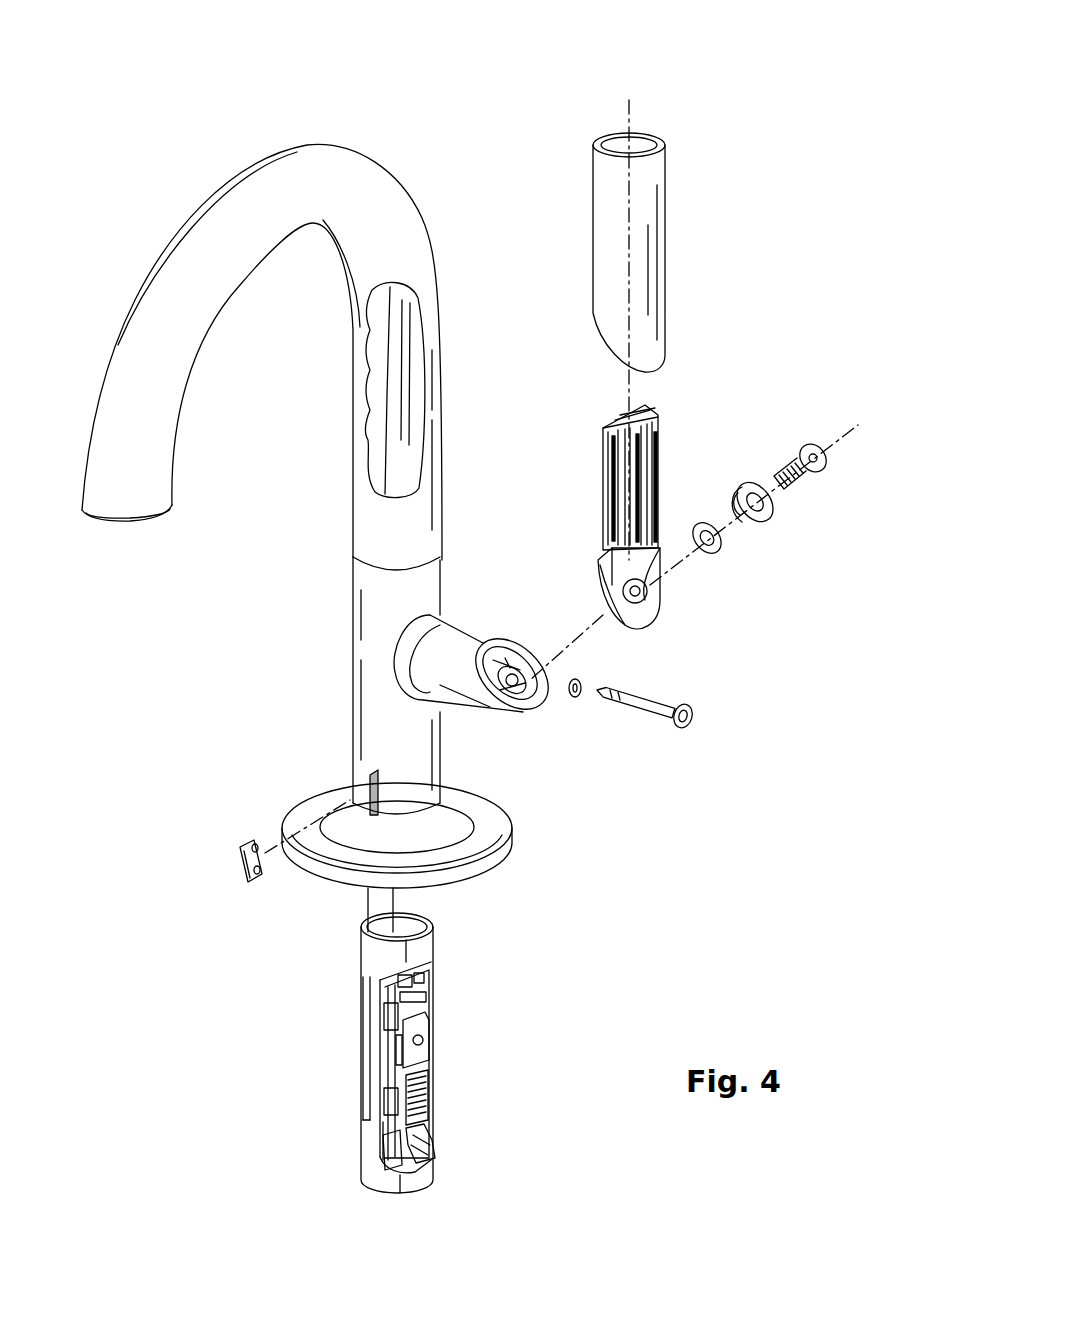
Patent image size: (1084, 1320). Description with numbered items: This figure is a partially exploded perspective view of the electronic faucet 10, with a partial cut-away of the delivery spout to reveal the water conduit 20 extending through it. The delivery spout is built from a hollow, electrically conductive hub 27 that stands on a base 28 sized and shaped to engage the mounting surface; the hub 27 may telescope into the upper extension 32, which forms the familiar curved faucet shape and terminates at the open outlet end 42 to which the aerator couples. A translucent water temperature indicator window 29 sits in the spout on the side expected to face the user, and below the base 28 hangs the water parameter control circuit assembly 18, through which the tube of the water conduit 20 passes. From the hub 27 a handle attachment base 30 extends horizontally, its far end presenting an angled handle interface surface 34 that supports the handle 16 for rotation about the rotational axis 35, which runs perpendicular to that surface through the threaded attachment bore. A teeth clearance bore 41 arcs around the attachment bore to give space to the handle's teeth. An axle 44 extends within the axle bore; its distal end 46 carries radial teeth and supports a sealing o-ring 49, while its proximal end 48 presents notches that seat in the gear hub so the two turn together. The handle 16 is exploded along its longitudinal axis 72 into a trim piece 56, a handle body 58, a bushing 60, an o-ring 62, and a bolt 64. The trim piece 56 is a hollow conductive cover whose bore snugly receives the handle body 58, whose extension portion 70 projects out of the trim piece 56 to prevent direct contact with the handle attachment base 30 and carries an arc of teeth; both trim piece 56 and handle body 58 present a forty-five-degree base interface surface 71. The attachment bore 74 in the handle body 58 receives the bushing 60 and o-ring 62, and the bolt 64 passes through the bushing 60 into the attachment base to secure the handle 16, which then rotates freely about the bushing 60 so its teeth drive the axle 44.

The electronic faucet 10 is at (742, 108).
The handle 16 is at (808, 295).
The water parameter control circuit assembly 18 is at (460, 1015).
The water conduit 20 is at (393, 408).
The hub 27 is at (355, 585).
The base 28 is at (298, 810).
The water temperature indicator window 29 is at (240, 860).
The handle attachment base 30 is at (483, 676).
The upper extension 32 is at (323, 148).
The handle interface surface 34 is at (548, 700).
The rotational axis 35 is at (863, 428).
The teeth clearance bore 41 is at (525, 690).
The outlet end 42 is at (122, 523).
The axle 44 is at (691, 762).
The distal end 46 is at (688, 735).
The proximal end 48 is at (605, 718).
The sealing o-ring 49 is at (585, 685).
The trim piece 56 is at (666, 198).
The handle body 58 is at (604, 440).
The bushing 60 is at (770, 512).
The o-ring 62 is at (705, 522).
The bolt 64 is at (808, 440).
The extension portion 70 is at (640, 607).
The base interface surface 71 is at (605, 583).
The longitudinal axis 72 is at (620, 107).
The attachment bore 74 is at (655, 587).